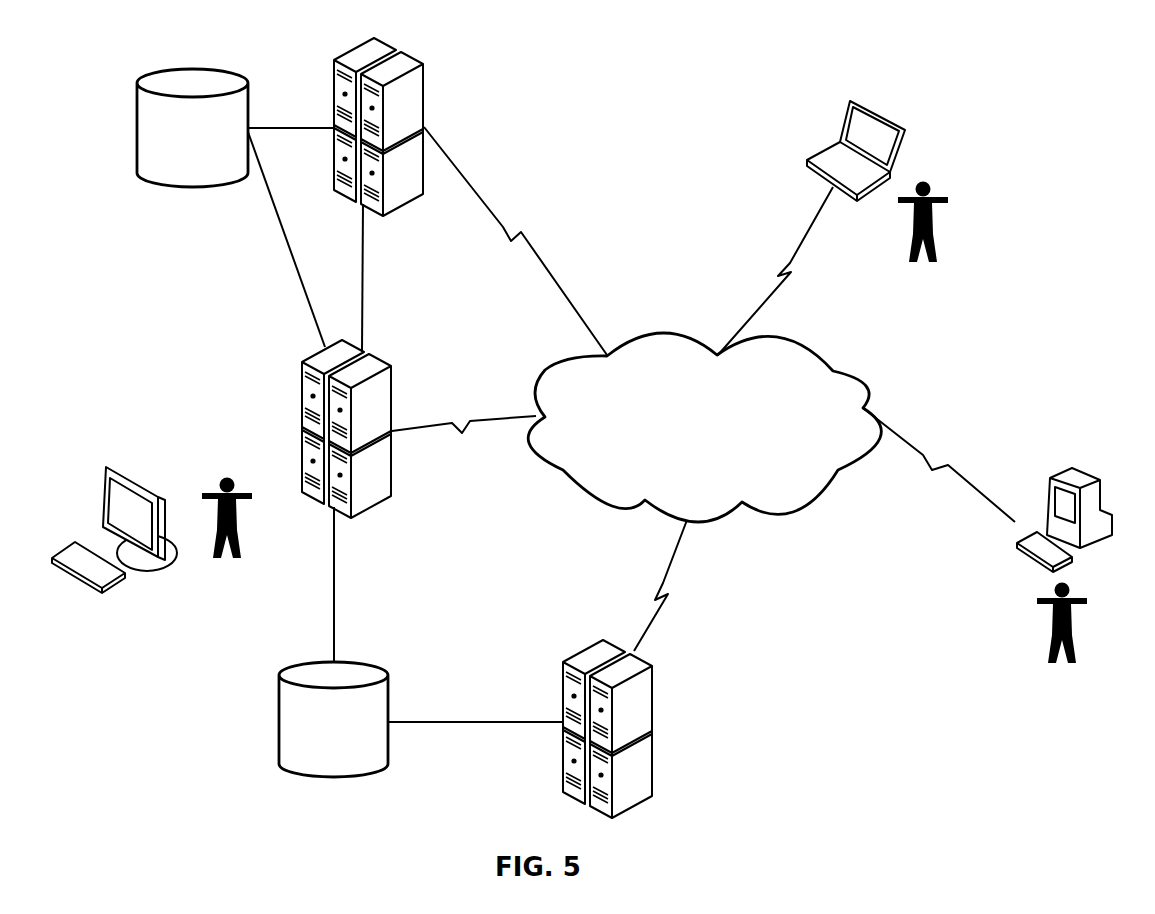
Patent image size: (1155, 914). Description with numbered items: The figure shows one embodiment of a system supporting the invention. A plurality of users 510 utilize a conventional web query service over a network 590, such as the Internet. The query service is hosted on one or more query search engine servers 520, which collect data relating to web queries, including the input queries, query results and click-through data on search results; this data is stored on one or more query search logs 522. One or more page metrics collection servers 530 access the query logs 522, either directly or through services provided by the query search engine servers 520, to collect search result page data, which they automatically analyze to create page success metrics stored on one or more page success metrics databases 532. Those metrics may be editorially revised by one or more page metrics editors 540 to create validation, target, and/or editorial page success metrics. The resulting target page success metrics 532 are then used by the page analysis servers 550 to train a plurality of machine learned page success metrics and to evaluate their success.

The users 510 is at (981, 242).
The query search engine servers 520 is at (437, 90).
The query search logs 522 is at (192, 128).
The page metrics collection servers 530 is at (262, 360).
The page success metrics databases 532 is at (333, 719).
The page metrics editors 540 is at (210, 597).
The page analysis servers 550 is at (668, 707).
The network 590 is at (704, 427).